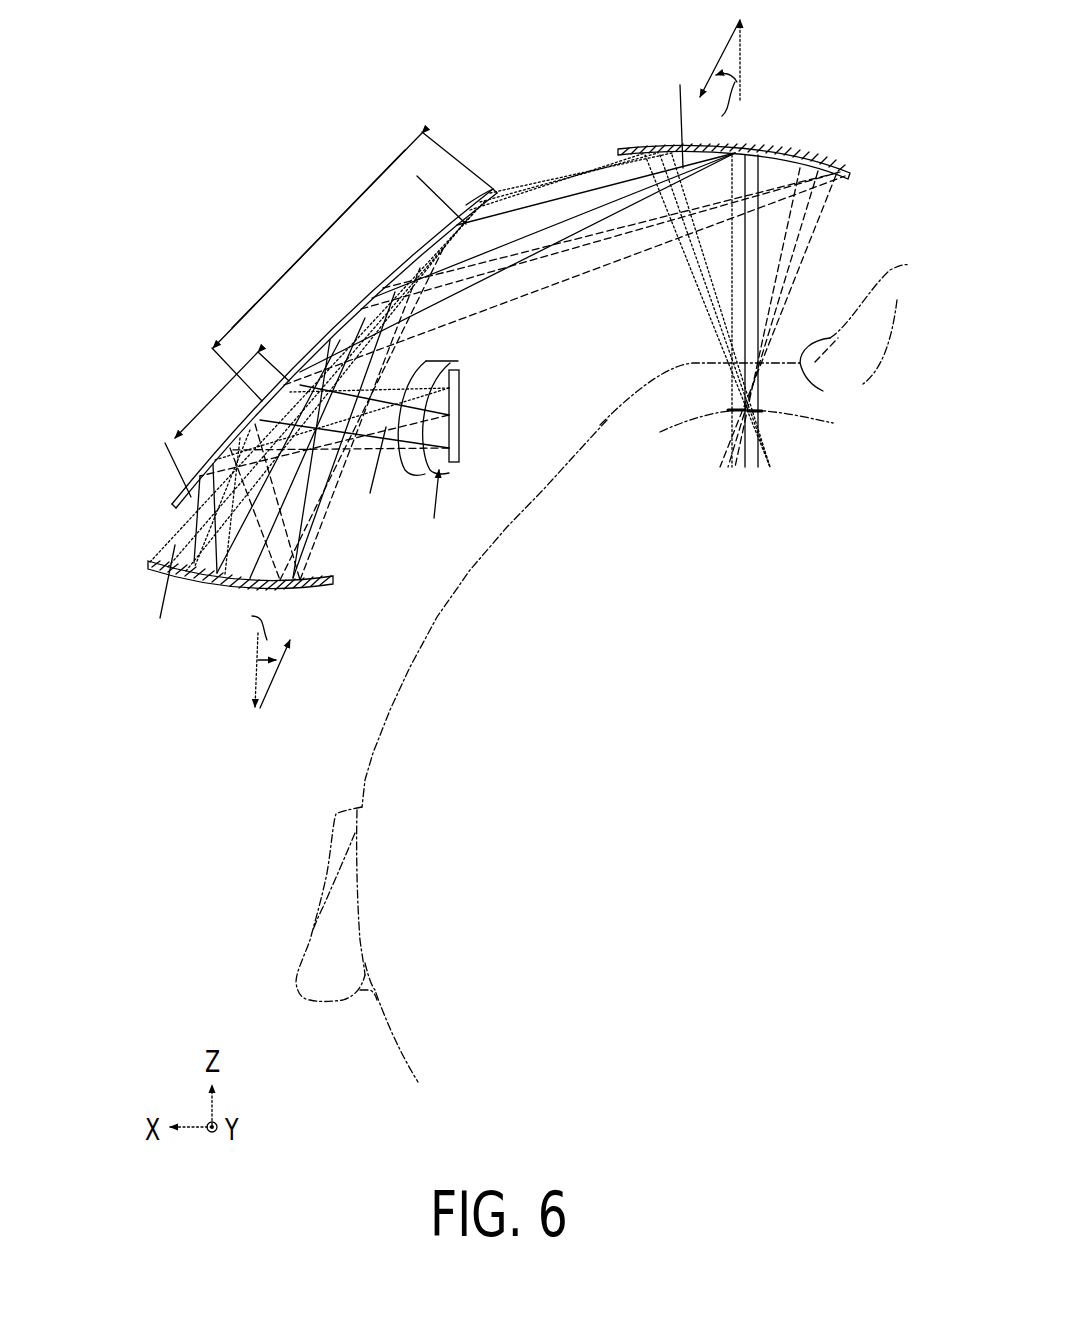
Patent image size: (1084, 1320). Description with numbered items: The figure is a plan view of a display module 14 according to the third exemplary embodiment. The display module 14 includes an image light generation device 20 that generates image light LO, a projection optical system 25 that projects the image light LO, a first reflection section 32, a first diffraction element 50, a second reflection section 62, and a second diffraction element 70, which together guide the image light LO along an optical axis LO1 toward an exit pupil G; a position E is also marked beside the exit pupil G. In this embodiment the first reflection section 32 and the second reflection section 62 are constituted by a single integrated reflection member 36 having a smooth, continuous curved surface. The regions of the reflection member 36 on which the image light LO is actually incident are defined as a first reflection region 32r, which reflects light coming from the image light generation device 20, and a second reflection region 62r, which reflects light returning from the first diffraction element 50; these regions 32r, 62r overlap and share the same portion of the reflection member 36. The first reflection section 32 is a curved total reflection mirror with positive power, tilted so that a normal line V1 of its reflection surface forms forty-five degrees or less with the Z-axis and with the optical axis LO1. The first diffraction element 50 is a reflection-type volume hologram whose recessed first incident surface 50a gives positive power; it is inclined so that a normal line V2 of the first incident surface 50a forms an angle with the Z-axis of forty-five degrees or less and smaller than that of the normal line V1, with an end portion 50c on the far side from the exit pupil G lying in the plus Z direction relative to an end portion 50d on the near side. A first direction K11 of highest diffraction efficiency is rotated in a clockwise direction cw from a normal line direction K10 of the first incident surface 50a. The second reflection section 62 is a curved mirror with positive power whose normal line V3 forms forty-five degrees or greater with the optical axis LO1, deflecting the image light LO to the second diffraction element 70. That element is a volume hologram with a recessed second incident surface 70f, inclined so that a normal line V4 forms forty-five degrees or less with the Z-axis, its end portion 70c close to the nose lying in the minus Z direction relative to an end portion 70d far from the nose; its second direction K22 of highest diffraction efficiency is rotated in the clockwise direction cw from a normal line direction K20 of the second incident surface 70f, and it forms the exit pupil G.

The display module 14 is at (388, 100).
The second reflection section 62 is at (347, 190).
The second reflection region 62r is at (312, 251).
The normal line of the reflection surface V3 is at (447, 203).
The reflection member 36 is at (473, 200).
The first reflection section 32 is at (150, 420).
The first reflection region 32r is at (205, 404).
The normal line of the reflection surface V1 is at (162, 474).
The projection optical system 25 is at (440, 362).
The image light generation device 20 is at (460, 401).
The optical axis LO1 is at (376, 476).
The image light LO is at (434, 510).
The first diffraction element 50 is at (211, 588).
The end portion 50c is at (148, 562).
The first incident surface 50a is at (313, 571).
The end portion 50d is at (318, 584).
The normal line of the first incident surface V2 is at (158, 620).
The clockwise direction cw is at (481, 367).
The normal line direction K10 is at (252, 678).
The first direction K11 is at (274, 680).
The second diffraction element 70 is at (778, 148).
The end portion 70d is at (620, 150).
The end portion 70c is at (848, 173).
The second incident surface 70f is at (846, 181).
The normal line of the second incident surface V4 is at (680, 115).
The normal line direction K20 is at (741, 63).
The second direction K22 is at (718, 57).
The exit pupil G is at (710, 400).
The eye (pupil position) E is at (770, 415).